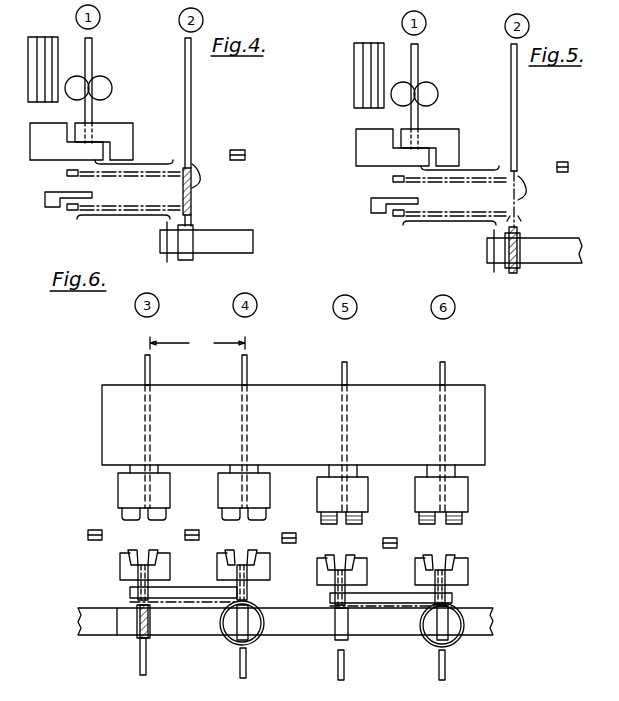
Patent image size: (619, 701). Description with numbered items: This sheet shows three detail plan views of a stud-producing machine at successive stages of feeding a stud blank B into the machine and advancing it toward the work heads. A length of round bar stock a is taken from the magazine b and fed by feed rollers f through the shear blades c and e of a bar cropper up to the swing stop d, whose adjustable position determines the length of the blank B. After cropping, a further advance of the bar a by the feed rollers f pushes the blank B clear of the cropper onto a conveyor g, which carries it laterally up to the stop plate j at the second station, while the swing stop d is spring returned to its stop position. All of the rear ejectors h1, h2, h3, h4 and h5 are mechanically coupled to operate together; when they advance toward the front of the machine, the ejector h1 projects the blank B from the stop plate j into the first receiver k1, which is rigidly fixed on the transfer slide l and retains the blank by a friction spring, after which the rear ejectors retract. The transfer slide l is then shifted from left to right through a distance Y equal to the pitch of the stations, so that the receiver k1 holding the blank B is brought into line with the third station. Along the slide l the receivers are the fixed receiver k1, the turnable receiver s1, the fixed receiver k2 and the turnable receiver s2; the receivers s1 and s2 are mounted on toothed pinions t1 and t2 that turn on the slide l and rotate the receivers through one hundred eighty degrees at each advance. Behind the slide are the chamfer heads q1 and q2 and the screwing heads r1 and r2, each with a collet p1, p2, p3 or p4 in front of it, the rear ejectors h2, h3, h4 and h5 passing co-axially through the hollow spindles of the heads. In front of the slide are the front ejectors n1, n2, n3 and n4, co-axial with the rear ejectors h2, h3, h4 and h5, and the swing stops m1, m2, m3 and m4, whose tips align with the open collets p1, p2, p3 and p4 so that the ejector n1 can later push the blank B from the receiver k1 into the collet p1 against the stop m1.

In FIG. 4, the round bar stock a is at (93, 53).
In FIG. 5, the round bar stock a is at (422, 94).
In FIG. 4, the magazine b is at (28, 44).
In FIG. 5, the magazine b is at (358, 73).
In FIG. 4, the shear blade c is at (123, 123).
In FIG. 5, the shear blade c is at (430, 137).
In FIG. 4, the swing stop d is at (45, 193).
In FIG. 5, the swing stop d is at (386, 196).
In FIG. 4, the shear blade e is at (43, 134).
In FIG. 5, the shear blade e is at (384, 145).
In FIG. 4, the feed rollers f is at (109, 82).
In FIG. 5, the feed rollers f is at (421, 85).
In FIG. 4, the conveyor g is at (128, 207).
In FIG. 5, the conveyor g is at (449, 234).
In FIG. 4, the rear ejector h1 is at (178, 129).
In FIG. 5, the rear ejector h1 is at (506, 133).
In FIG. 6, the rear ejector h2 is at (158, 429).
In FIG. 6, the rear ejector h3 is at (255, 429).
In FIG. 6, the rear ejector h4 is at (355, 433).
In FIG. 6, the rear ejector h5 is at (453, 433).
In FIG. 4, the stop plate j is at (200, 178).
In FIG. 5, the stop plate j is at (526, 188).
In FIG. 4, the swing stop m1 is at (251, 155).
In FIG. 5, the swing stop m1 is at (577, 166).
In FIG. 6, the swing stop m1 is at (108, 537).
In FIG. 6, the swing stop m2 is at (205, 538).
In FIG. 6, the swing stop m3 is at (302, 541).
In FIG. 6, the swing stop m4 is at (404, 543).
In FIG. 4, the stud blank B is at (182, 190).
In FIG. 5, the stud blank B is at (518, 260).
In FIG. 6, the stud blank B is at (138, 640).
In FIG. 4, the stud blank receiver k1 is at (194, 256).
In FIG. 5, the stud blank receiver k1 is at (530, 257).
In FIG. 6, the stud blank receiver k1 is at (150, 637).
In FIG. 6, the stud blank receiver k2 is at (346, 641).
In FIG. 4, the transfer slide l is at (206, 247).
In FIG. 5, the transfer slide l is at (534, 258).
In FIG. 6, the transfer slide l is at (115, 632).
In FIG. 6, the distance Y is at (197, 343).
In FIG. 6, the chamfer head q1 is at (155, 492).
In FIG. 6, the chamfer head q2 is at (255, 492).
In FIG. 6, the screwing head r1 is at (353, 494).
In FIG. 6, the screwing head r2 is at (453, 494).
In FIG. 6, the collet p1 is at (150, 558).
In FIG. 6, the collet p2 is at (249, 558).
In FIG. 6, the collet p3 is at (349, 562).
In FIG. 6, the collet p4 is at (449, 562).
In FIG. 6, the front ejector n1 is at (154, 656).
In FIG. 6, the front ejector n2 is at (254, 663).
In FIG. 6, the front ejector n3 is at (352, 666).
In FIG. 6, the front ejector n4 is at (452, 666).
In FIG. 6, the turnable receiver s1 is at (236, 636).
In FIG. 6, the turnable receiver s2 is at (436, 636).
In FIG. 6, the toothed pinion t1 is at (254, 640).
In FIG. 6, the toothed pinion t2 is at (453, 643).